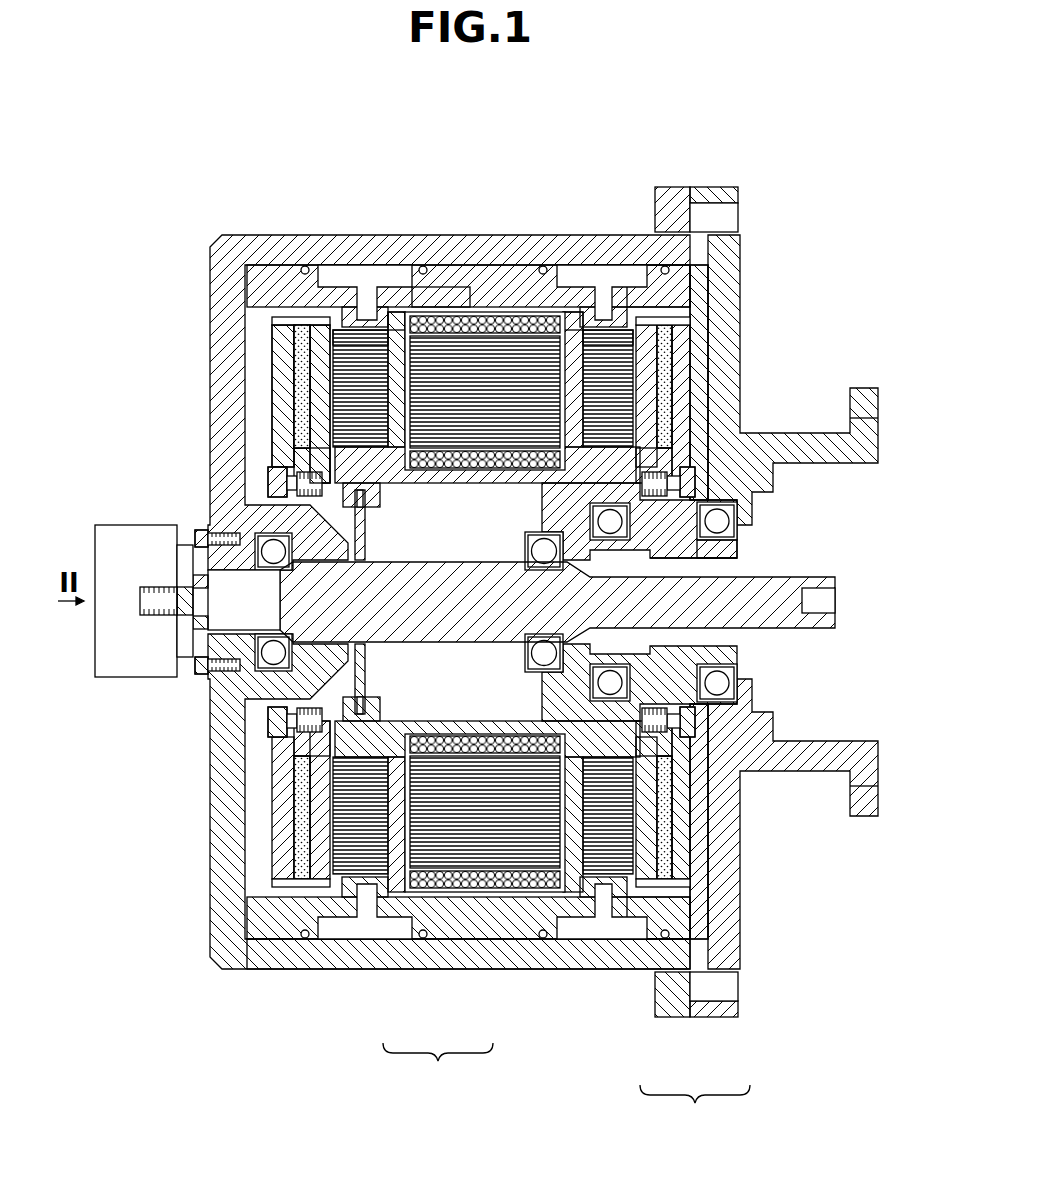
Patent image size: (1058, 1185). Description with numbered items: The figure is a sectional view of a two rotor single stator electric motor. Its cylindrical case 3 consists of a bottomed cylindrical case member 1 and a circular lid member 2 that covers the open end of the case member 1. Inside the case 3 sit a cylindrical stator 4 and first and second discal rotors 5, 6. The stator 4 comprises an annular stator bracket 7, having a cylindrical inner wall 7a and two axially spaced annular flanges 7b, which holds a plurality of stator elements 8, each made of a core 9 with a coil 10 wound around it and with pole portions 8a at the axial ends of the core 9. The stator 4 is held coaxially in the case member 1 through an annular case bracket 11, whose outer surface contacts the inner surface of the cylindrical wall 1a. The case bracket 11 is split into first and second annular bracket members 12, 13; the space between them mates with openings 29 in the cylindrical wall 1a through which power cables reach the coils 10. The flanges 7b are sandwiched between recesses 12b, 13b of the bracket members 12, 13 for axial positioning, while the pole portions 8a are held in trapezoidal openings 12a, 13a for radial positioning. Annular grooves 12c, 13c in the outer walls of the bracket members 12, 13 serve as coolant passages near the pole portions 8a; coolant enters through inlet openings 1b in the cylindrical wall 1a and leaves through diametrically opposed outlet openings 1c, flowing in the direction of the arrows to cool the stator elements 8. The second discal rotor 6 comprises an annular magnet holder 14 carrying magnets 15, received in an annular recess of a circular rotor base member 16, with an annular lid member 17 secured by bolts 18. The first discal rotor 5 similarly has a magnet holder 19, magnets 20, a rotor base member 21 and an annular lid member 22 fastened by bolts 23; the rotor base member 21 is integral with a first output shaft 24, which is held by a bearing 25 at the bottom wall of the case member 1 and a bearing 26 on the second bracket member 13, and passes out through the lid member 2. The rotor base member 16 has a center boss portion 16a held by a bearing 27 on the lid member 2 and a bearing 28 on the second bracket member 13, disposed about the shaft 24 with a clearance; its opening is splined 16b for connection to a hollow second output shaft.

The case member 1 is at (640, 967).
The cylindrical wall 1a is at (525, 957).
The inlet openings 1b is at (370, 280).
The outlet openings 1c is at (368, 923).
The circular lid member 2 is at (708, 1010).
The cylindrical case 3 is at (681, 1123).
The cylindrical stator 4 is at (535, 297).
The first discal rotor 5 is at (281, 302).
The second discal rotor 6 is at (706, 312).
The annular stator bracket 7 is at (398, 312).
The cylindrical inner wall 7a is at (455, 484).
The annular flanges 7b is at (392, 330).
The stator elements 8 is at (488, 292).
The pole portions 8a is at (352, 340).
The core 9 is at (529, 297).
The coil 10 is at (494, 300).
The annular case bracket 11 is at (417, 1090).
The first annular bracket member 12 is at (413, 927).
The trapezoidal openings 12a is at (300, 448).
The recess 12b is at (407, 490).
The annular groove 12c is at (330, 298).
The second annular bracket member 13 is at (497, 928).
The trapezoidal openings 13a is at (692, 405).
The recess 13b is at (543, 490).
The annular groove 13c is at (642, 254).
The annular magnet holder 14 is at (710, 887).
The magnets 15 is at (693, 857).
The circular rotor base member 16 is at (687, 830).
The center boss portion 16a is at (737, 546).
The spline 16b is at (723, 562).
The annular lid member 17 is at (672, 806).
The bolts 18 is at (700, 728).
The annular magnet holder 19 is at (273, 325).
The magnets 20 is at (277, 358).
The rotor base member 21 is at (285, 395).
The annular lid member 22 is at (290, 423).
The bolts 23 is at (275, 482).
The first output shaft 24 is at (818, 615).
The bearing 25 is at (262, 655).
The bearing 26 is at (525, 682).
The bearing 27 is at (732, 500).
The bearing 28 is at (643, 575).
The openings 29 is at (432, 300).